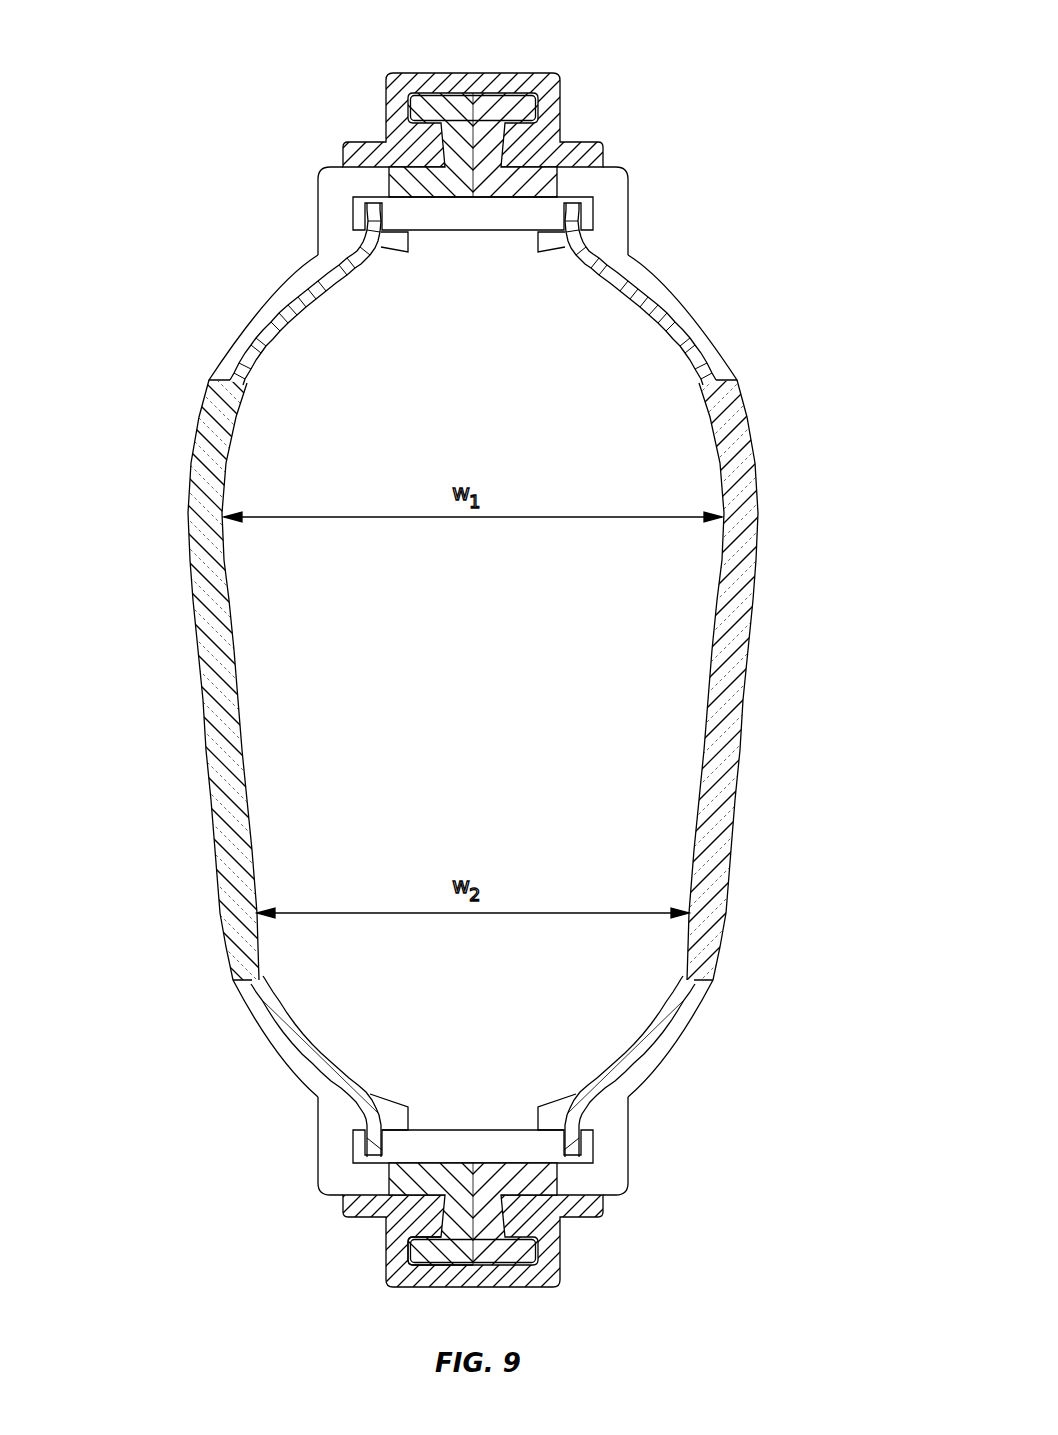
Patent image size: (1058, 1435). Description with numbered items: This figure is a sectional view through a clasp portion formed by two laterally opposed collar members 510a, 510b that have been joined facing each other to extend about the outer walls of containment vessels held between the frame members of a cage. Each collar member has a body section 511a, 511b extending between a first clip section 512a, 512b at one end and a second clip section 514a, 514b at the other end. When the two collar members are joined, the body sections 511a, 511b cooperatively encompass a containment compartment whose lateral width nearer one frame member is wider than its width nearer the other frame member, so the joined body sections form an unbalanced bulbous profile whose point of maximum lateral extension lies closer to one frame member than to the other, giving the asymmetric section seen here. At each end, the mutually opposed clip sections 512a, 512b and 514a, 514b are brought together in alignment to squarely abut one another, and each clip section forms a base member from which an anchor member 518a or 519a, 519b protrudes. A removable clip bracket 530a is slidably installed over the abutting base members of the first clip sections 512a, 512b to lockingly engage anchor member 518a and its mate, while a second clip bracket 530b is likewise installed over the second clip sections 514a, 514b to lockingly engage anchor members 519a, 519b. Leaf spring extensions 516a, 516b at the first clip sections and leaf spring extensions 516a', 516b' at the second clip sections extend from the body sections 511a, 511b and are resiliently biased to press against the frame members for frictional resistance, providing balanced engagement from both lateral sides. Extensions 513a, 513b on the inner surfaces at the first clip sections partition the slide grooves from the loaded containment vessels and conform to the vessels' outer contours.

The clip bracket 530a is at (528, 82).
The anchor member 518a is at (517, 107).
The first clip section 512a is at (593, 178).
The first clip section 512b is at (362, 177).
The extension 513a is at (610, 252).
The extension 513b is at (395, 250).
The leaf spring extension 516a is at (627, 308).
The leaf spring extension 516b is at (305, 318).
The body section 511a is at (740, 577).
The body section 511b is at (208, 570).
The collar member 510a is at (740, 694).
The collar member 510b is at (203, 693).
The leaf spring extension 516a' is at (616, 1063).
The leaf spring extension 516b' is at (334, 1066).
The second clip section 514a is at (590, 1178).
The second clip section 514b is at (337, 1173).
The anchor member 519a is at (482, 1218).
The anchor member 519b is at (423, 1250).
The clip bracket 530b is at (513, 1278).